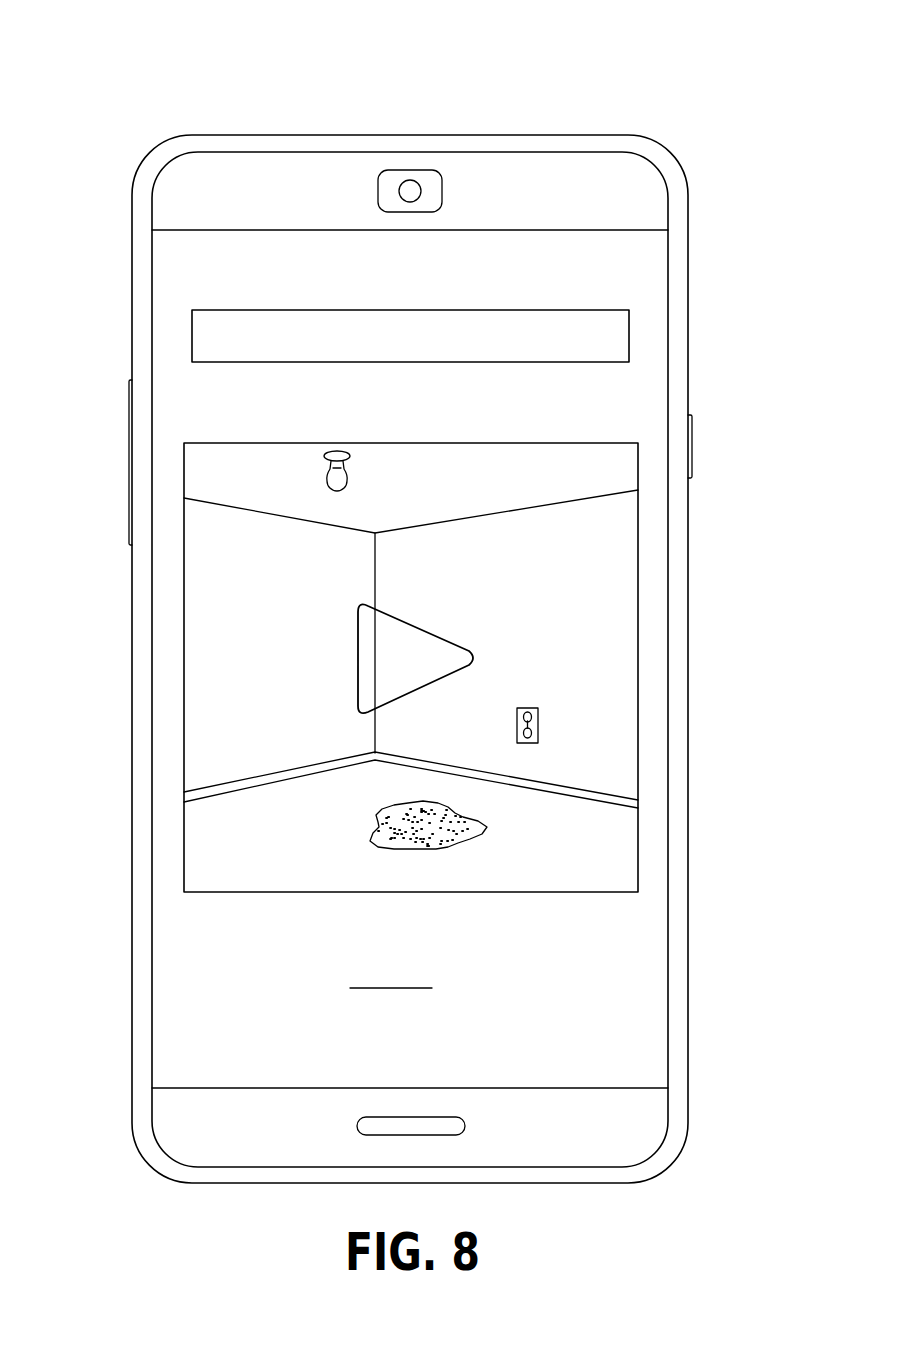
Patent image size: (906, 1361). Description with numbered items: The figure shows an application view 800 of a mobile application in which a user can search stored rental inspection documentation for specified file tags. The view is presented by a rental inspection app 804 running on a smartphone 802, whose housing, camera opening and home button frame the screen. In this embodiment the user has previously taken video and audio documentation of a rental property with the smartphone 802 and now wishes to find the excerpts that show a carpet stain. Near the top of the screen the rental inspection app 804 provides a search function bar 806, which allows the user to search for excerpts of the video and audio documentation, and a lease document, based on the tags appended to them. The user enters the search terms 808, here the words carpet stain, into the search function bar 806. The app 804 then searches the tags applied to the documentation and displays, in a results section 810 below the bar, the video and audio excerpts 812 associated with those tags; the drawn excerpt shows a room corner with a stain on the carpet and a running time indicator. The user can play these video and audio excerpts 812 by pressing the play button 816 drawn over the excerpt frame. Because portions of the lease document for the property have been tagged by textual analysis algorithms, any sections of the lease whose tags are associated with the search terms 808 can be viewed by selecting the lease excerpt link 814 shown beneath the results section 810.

The application view 800 is at (509, 84).
The smartphone 802 is at (272, 134).
The rental inspection app 804 is at (616, 276).
The search function bar 806 is at (192, 340).
The search terms 808 is at (578, 357).
The results section 810 is at (183, 418).
The video and audio excerpts 812 is at (604, 632).
The lease excerpt link 814 is at (370, 944).
The play button 816 is at (356, 657).